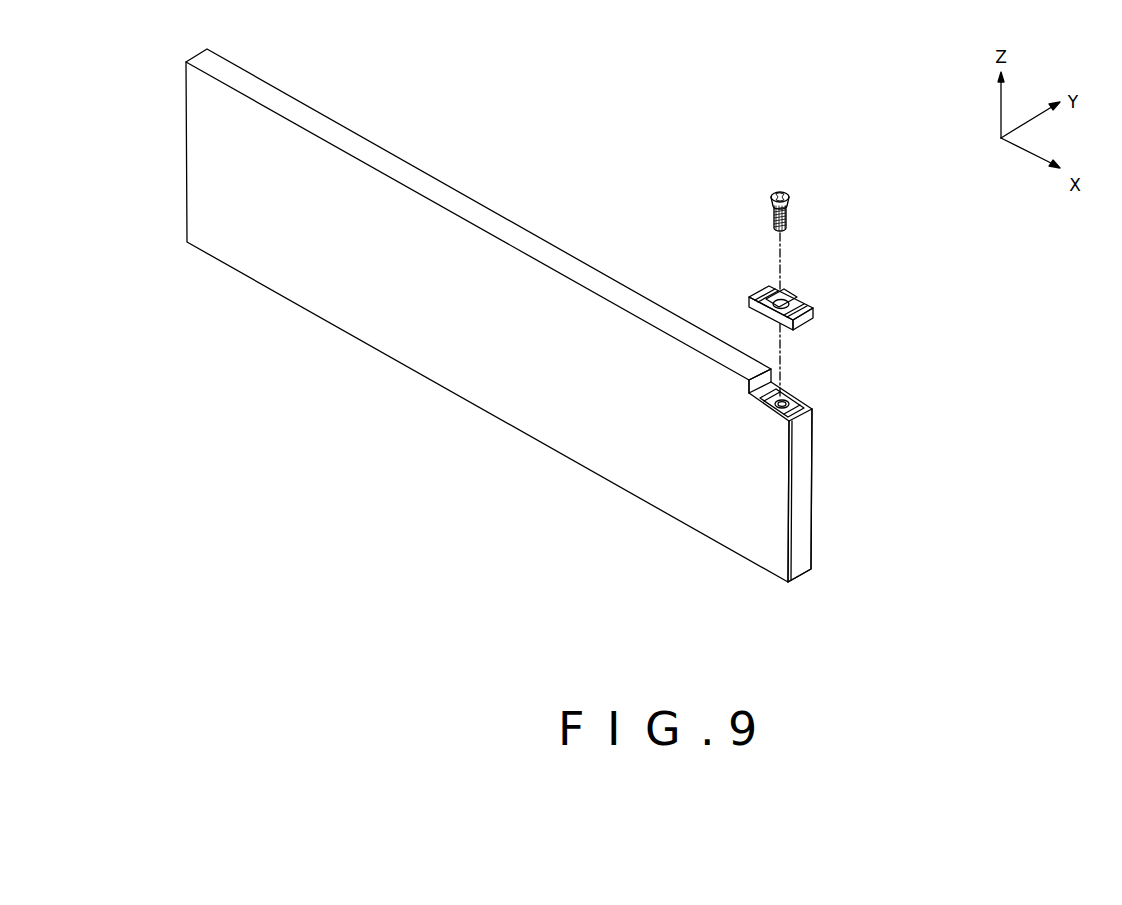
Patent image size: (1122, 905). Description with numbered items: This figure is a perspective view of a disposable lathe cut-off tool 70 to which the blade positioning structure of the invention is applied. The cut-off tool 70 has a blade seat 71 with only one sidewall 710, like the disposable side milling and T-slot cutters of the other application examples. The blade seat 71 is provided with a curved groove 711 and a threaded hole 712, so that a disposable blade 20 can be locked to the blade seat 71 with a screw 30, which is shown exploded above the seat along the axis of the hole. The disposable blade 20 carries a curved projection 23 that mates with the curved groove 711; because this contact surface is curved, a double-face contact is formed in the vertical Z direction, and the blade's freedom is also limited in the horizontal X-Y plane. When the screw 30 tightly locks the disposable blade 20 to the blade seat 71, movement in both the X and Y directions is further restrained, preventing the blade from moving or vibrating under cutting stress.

The disposable lathe cut-off tool 70 is at (571, 224).
The blade seat 71 is at (813, 410).
The sidewall 710 is at (758, 388).
The curved groove 711 is at (806, 402).
The threaded hole 712 is at (790, 393).
The disposable blade 20 is at (803, 305).
The curved projection 23 is at (765, 289).
The screw 30 is at (787, 195).